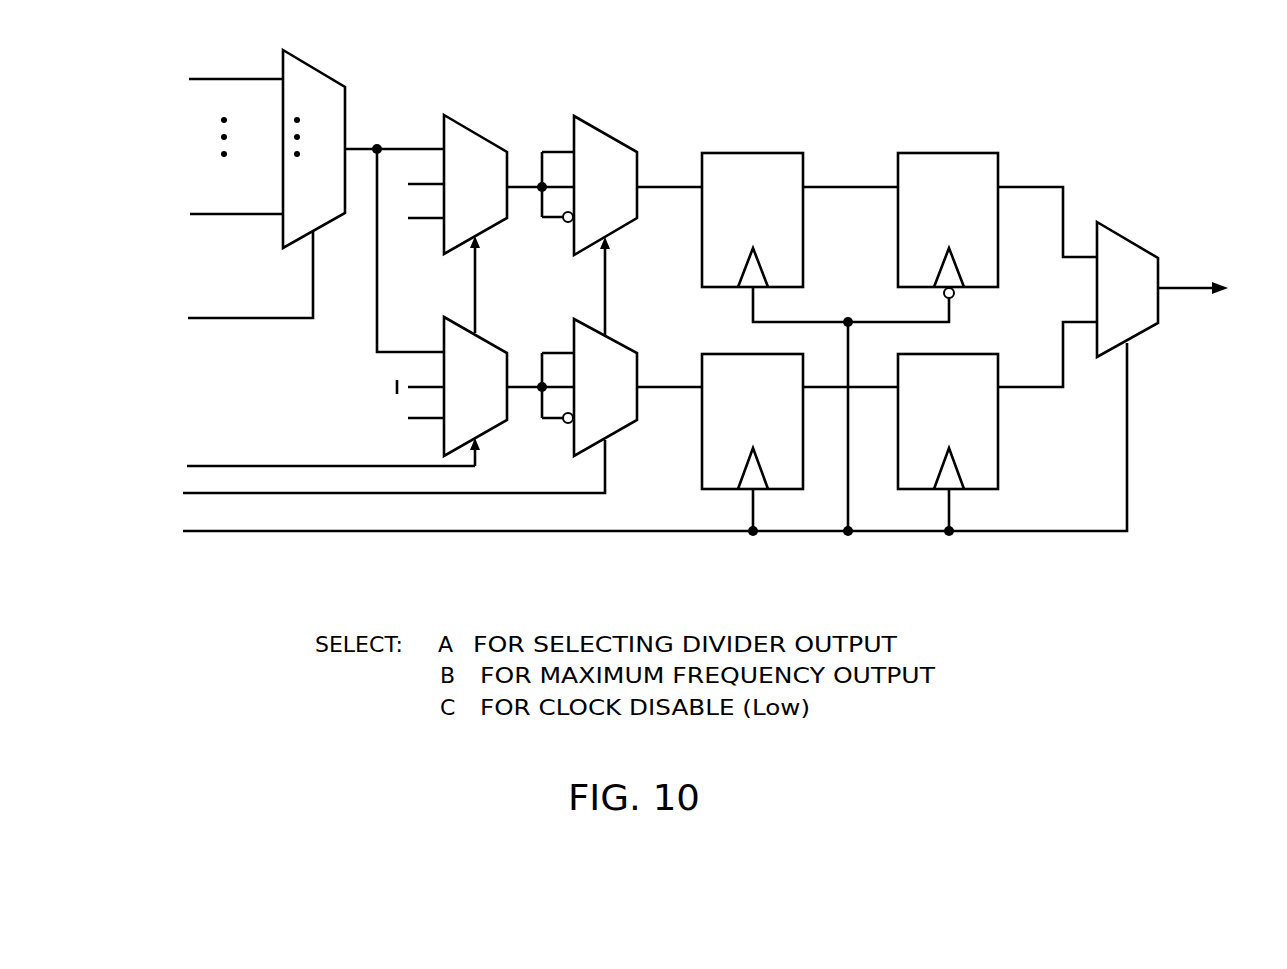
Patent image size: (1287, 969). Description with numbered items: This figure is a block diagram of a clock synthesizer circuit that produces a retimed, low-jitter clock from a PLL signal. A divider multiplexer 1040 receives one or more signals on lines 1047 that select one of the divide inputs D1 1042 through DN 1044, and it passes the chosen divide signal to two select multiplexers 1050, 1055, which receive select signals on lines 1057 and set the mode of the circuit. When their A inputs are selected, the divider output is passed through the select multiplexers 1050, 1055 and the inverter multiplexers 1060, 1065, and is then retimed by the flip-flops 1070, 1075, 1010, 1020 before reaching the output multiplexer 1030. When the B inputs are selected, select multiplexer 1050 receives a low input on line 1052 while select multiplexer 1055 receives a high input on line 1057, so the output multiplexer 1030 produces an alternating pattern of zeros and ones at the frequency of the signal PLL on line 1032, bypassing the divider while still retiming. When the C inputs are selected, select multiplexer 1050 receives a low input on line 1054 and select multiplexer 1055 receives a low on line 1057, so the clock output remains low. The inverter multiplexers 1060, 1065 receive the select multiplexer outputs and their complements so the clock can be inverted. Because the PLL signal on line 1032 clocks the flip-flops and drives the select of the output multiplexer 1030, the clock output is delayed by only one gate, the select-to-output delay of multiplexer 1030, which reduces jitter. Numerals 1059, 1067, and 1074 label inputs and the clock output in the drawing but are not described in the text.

The divider multiplexer 1040 is at (318, 69).
The input D1 1042 is at (202, 78).
The input DN 1044 is at (253, 216).
The lines carrying divider select signals 1047 is at (253, 319).
The select multiplexer 1050 is at (470, 129).
The line carrying low input 1052 is at (414, 184).
The line carrying low input 1054 is at (424, 219).
The select multiplexer 1055 is at (485, 339).
The lines carrying select signals 1057 is at (421, 385).
The logic zero input C of second multiplexer 1059 is at (424, 420).
The inverter multiplexer 1060 is at (600, 131).
The inverter multiplexer 1065 is at (620, 344).
The invert signal 1067 is at (337, 494).
The line carrying signal PLL 1032 is at (390, 532).
The flip-flop 1070 is at (757, 153).
The flip-flop 1010 is at (942, 153).
The flip-flop 1075 is at (702, 456).
The flip-flop 1020 is at (998, 430).
The output multiplexer 1030 is at (1138, 336).
The clock output 1074 is at (1193, 290).